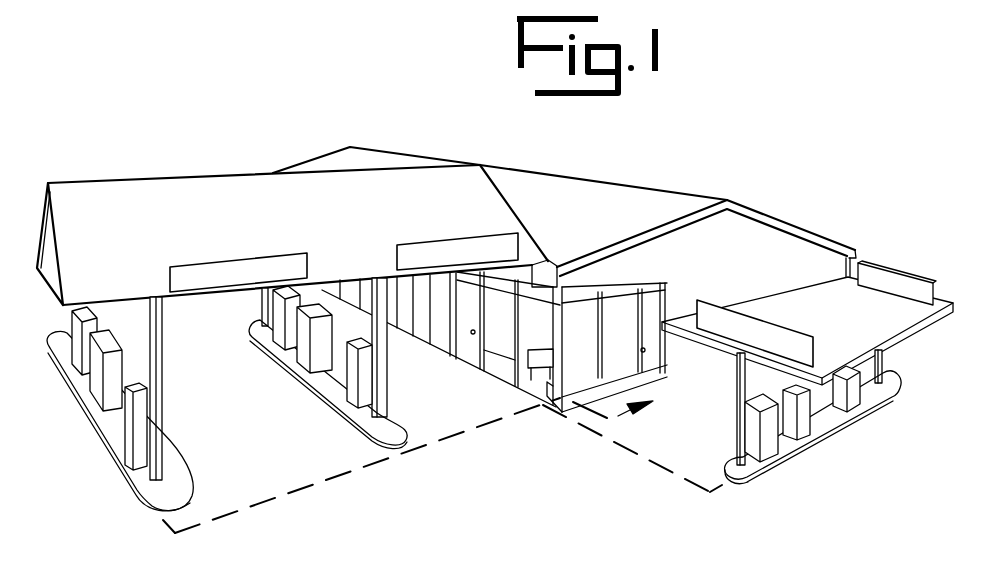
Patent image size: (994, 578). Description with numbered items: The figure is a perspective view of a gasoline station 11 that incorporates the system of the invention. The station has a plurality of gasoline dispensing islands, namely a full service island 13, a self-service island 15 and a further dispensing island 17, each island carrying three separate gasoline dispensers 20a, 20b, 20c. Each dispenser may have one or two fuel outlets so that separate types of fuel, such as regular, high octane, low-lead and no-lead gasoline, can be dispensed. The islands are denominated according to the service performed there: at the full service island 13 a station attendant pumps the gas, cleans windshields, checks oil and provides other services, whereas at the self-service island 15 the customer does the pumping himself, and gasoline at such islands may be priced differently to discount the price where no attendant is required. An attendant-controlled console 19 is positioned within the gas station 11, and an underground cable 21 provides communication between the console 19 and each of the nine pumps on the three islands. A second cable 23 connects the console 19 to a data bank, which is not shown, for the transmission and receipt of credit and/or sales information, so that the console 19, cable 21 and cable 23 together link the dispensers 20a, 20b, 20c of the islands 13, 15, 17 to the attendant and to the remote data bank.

The gasoline station 11 is at (620, 197).
The full service island 13 is at (113, 480).
The self-service island 15 is at (330, 397).
The gasoline dispensing island 17 is at (798, 447).
The attendant-controlled console 19 is at (528, 356).
The gasoline dispenser 20a is at (82, 378).
The gasoline dispenser 20b is at (101, 410).
The gasoline dispenser 20c is at (128, 437).
The underground cable 21 is at (330, 478).
The second cable 23 is at (622, 418).